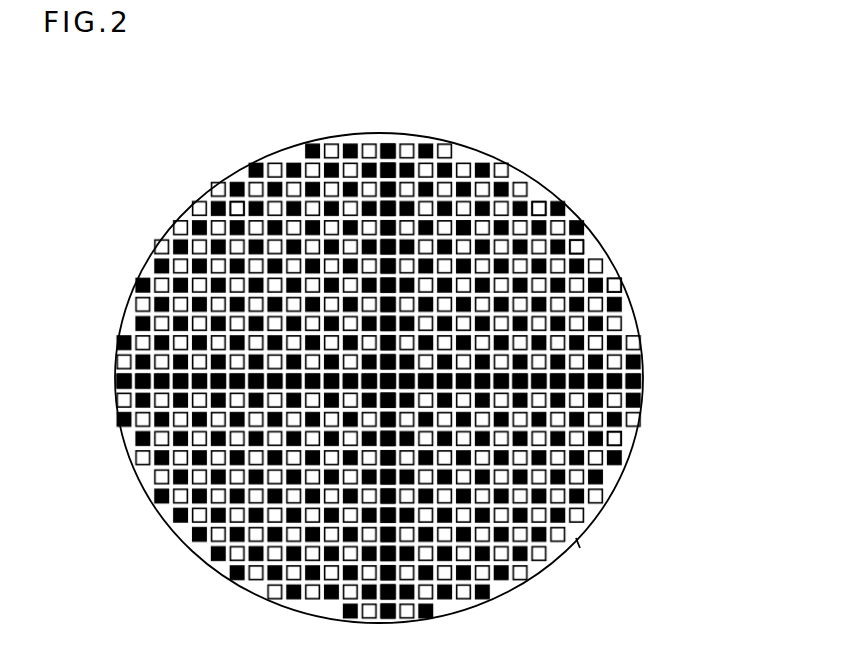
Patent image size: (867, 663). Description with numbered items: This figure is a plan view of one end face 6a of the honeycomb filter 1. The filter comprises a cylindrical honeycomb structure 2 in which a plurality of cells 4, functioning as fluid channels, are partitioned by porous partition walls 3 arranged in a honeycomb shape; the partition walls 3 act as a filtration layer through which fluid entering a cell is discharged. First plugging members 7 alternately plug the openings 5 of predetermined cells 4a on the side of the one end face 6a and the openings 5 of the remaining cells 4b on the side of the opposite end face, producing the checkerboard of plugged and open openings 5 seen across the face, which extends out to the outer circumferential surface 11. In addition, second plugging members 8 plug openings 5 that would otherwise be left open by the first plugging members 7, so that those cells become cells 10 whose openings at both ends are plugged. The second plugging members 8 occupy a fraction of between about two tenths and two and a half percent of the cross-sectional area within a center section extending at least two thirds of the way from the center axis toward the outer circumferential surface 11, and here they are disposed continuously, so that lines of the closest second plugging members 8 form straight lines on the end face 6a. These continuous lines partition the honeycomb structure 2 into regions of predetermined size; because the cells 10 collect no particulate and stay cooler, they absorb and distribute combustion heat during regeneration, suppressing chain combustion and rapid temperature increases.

The honeycomb filter 1 is at (271, 91).
The honeycomb structure 2 is at (645, 397).
The partition walls 3 is at (247, 220).
The cells 4 is at (637, 306).
The predetermined cells 4a is at (604, 434).
The remaining cells 4b is at (540, 200).
The openings 5 is at (570, 247).
The one end face 6a is at (597, 549).
The first plugging members 7 is at (463, 225).
The second plugging members 8 is at (602, 377).
The cells whose openings at both ends are plugged 10 is at (395, 160).
The outer circumferential surface 11 is at (613, 283).